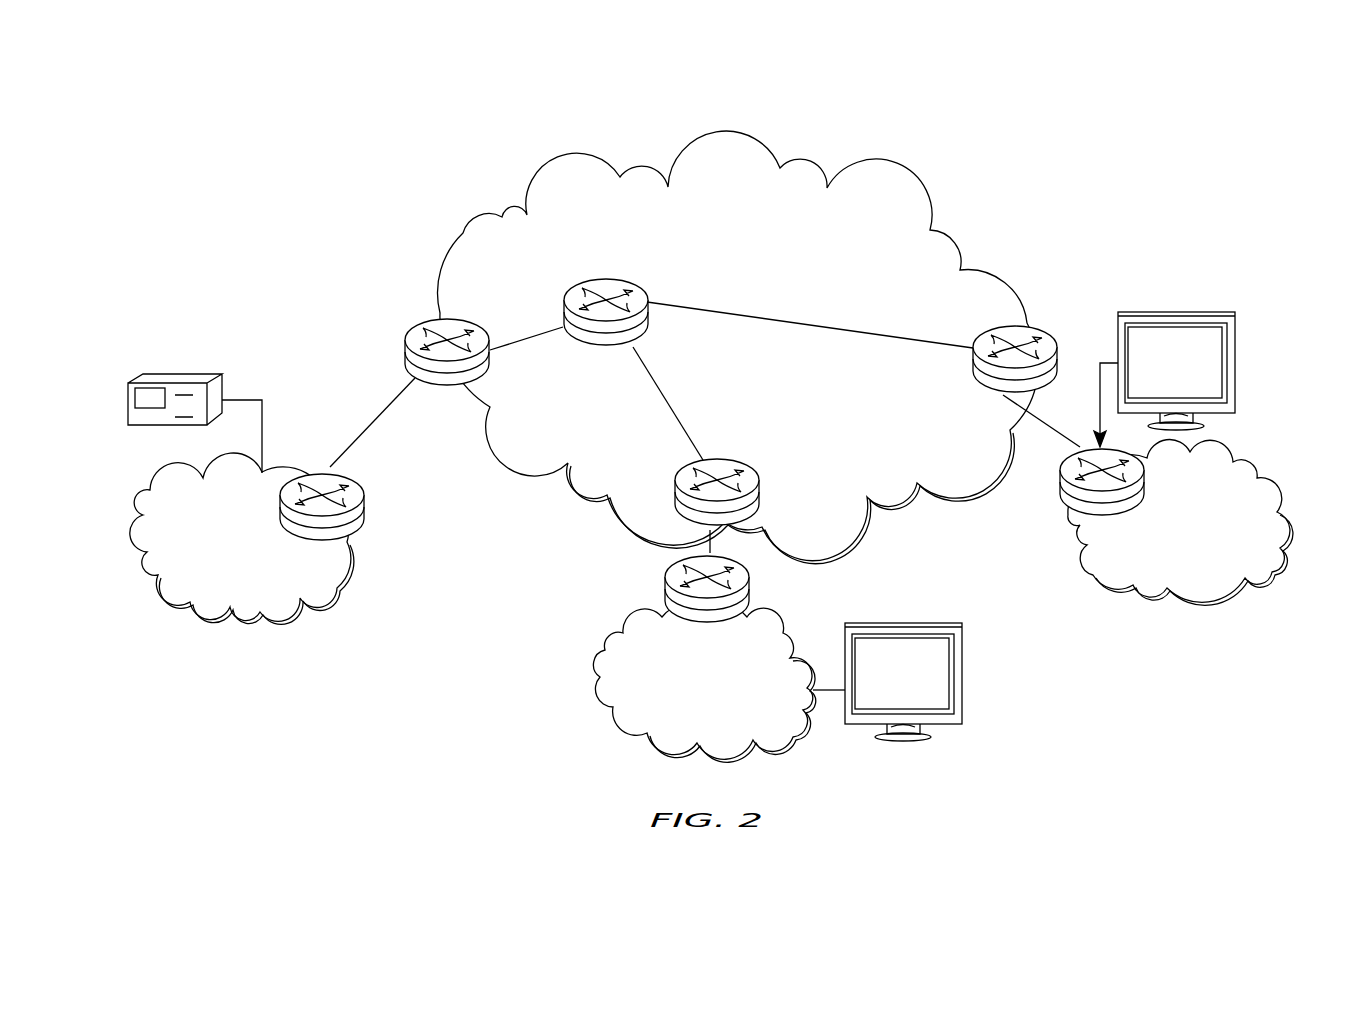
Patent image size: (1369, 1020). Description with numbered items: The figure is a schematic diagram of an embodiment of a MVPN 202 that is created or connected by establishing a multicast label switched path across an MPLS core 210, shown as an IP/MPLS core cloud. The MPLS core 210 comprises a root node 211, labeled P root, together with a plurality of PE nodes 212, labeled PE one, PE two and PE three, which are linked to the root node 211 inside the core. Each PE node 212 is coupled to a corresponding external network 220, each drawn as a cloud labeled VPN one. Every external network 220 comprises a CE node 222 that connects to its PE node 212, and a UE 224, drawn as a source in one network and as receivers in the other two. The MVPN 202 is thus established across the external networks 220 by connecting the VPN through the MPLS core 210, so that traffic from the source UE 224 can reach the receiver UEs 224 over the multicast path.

The MVPN 202 is at (277, 125).
The MPLS core 210 is at (740, 135).
The root node 211 is at (560, 299).
The PE nodes 212 is at (405, 347).
The external networks 220 is at (137, 537).
The CE node 222 is at (366, 507).
The UE 224 is at (127, 403).